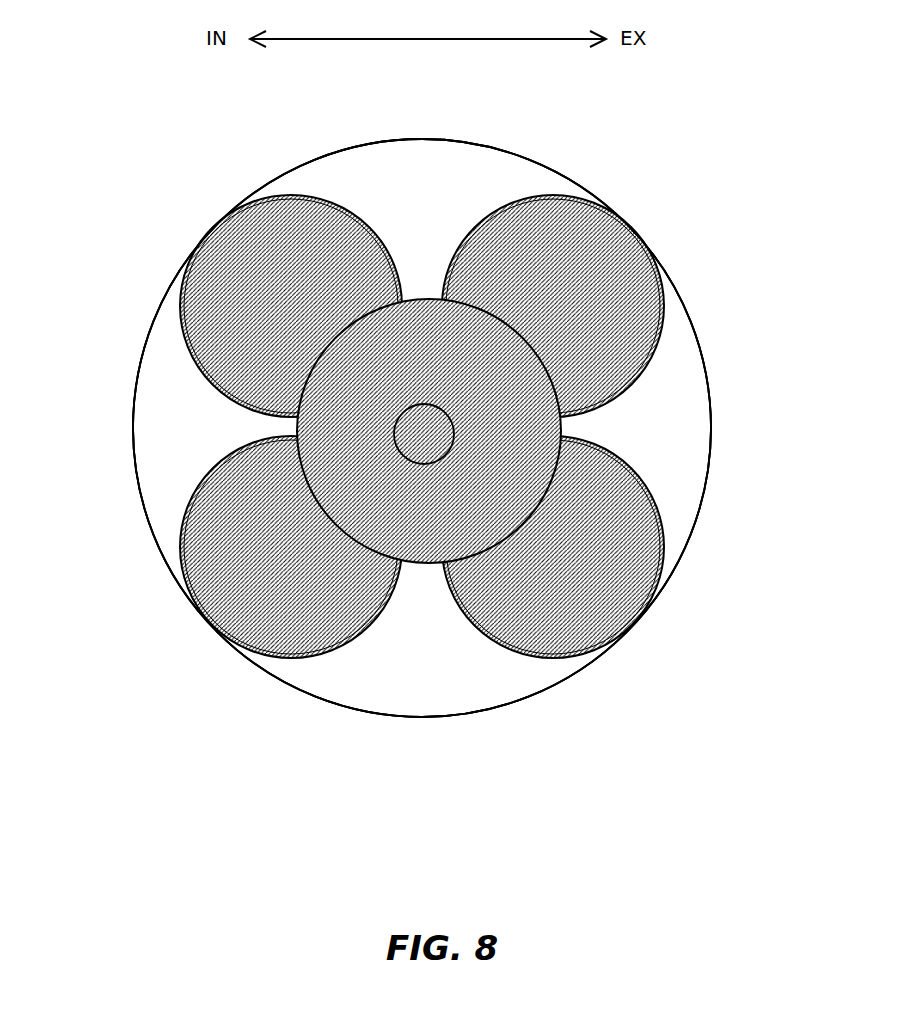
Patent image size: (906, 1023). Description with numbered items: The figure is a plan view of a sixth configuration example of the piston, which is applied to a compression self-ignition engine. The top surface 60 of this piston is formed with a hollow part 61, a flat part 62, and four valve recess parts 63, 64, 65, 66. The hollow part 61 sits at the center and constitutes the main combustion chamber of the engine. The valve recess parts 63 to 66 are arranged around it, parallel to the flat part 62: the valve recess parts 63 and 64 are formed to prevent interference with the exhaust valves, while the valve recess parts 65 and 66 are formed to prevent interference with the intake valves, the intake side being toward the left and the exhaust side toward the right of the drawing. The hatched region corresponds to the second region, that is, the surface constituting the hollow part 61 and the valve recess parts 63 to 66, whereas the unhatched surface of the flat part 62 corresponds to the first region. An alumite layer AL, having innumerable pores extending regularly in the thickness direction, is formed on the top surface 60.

The top surface 60 is at (574, 181).
The hollow part 61 is at (387, 352).
The flat part 62 is at (660, 477).
The valve recess part 63 is at (620, 585).
The valve recess part 64 is at (612, 263).
The valve recess part 65 is at (233, 595).
The valve recess part 66 is at (215, 273).
The alumite layer AL is at (148, 395).